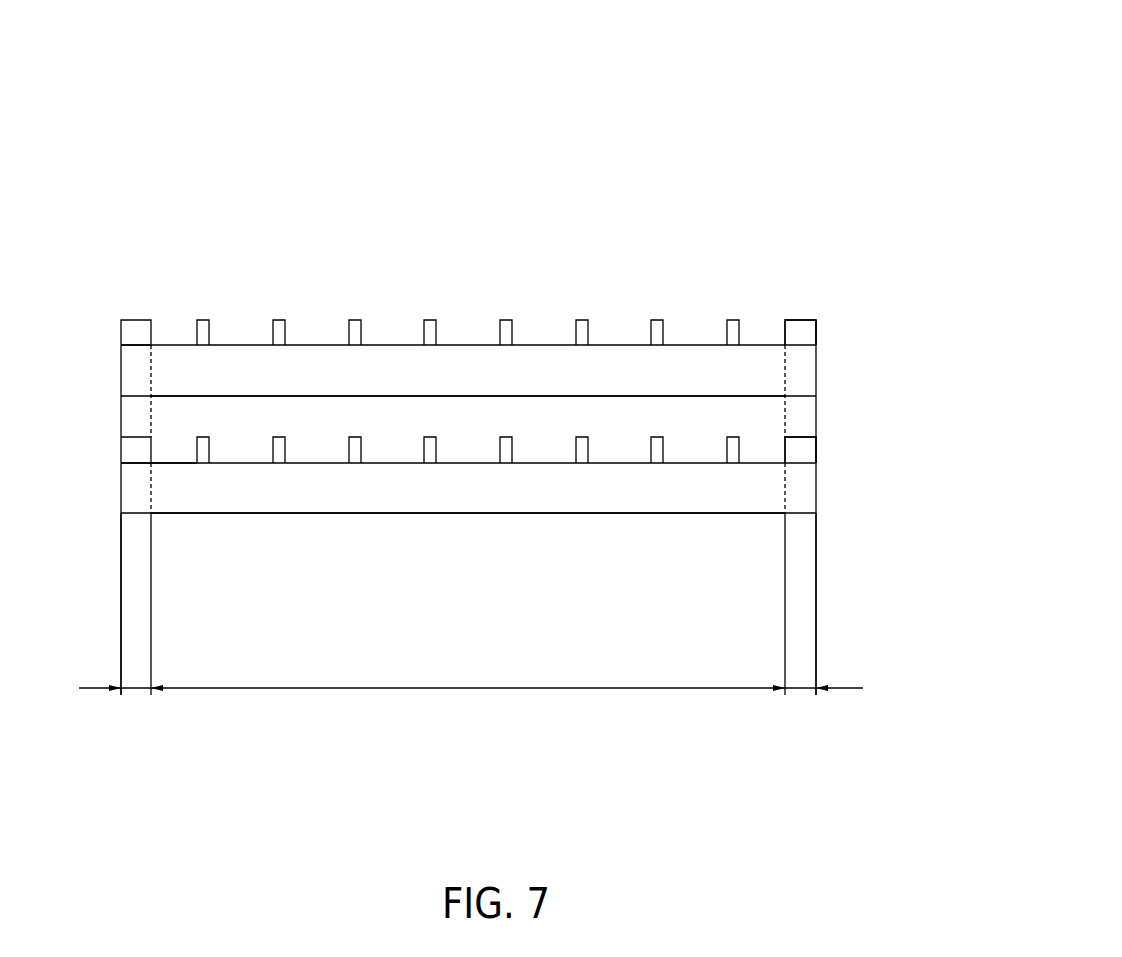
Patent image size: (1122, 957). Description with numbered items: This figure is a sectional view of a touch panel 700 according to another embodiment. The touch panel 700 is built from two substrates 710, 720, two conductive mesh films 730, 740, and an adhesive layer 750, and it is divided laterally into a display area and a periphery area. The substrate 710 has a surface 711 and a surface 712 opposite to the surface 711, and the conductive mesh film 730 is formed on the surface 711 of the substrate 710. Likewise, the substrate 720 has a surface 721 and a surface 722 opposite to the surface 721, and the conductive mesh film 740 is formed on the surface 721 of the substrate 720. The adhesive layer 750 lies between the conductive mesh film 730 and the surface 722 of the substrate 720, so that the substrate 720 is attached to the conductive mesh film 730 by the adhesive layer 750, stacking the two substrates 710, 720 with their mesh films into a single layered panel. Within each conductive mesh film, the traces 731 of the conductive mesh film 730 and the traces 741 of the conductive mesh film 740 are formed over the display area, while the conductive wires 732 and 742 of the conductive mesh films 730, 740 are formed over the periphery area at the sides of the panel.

The touch panel 700 is at (788, 56).
The substrate 710 is at (241, 498).
The surface 711 is at (175, 447).
The surface 712 is at (339, 524).
The substrate 720 is at (242, 372).
The surface 721 is at (397, 332).
The surface 722 is at (468, 412).
The conductive mesh film 730 is at (895, 412).
The traces 731 is at (733, 443).
The conductive wires 732 is at (800, 455).
The conductive mesh film 740 is at (895, 285).
The traces 741 is at (733, 323).
The conductive wires 742 is at (800, 333).
The adhesive layer 750 is at (141, 423).